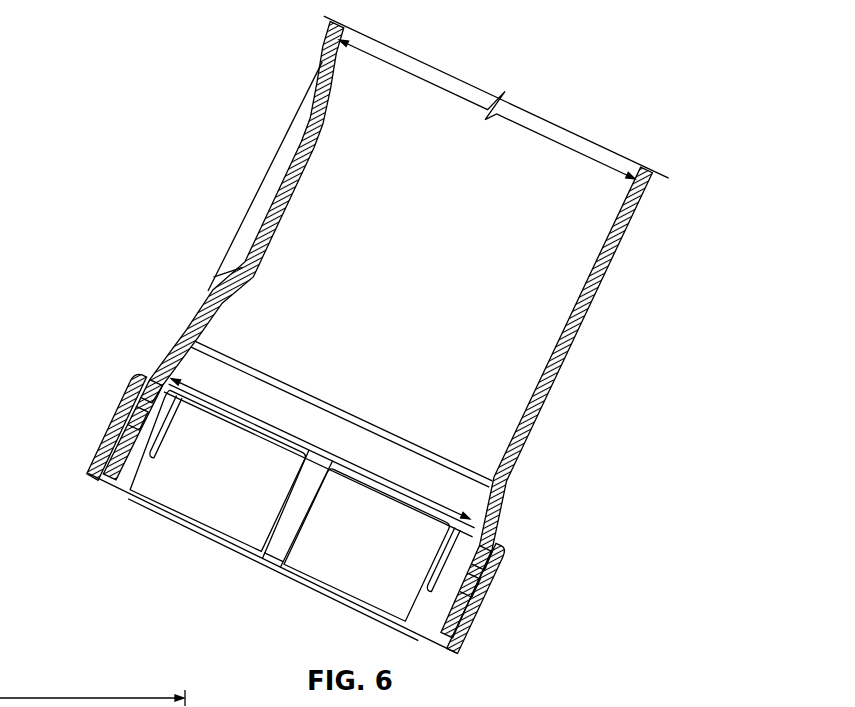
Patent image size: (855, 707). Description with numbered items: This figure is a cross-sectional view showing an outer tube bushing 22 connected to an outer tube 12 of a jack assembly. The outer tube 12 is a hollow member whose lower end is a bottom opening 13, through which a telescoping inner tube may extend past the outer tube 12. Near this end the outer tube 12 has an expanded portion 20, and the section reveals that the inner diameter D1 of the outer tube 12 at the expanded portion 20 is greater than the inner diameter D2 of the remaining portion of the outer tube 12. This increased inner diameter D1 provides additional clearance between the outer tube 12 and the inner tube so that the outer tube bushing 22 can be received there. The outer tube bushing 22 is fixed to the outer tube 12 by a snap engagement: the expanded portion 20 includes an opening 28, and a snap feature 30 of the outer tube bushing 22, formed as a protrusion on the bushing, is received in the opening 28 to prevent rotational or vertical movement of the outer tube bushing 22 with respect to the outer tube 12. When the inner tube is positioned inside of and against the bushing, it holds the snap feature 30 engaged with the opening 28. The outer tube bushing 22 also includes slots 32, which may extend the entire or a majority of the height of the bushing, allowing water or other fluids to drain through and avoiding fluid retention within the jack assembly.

The outer tube 12 is at (207, 300).
The bottom opening 13 is at (184, 546).
The expanded portion 20 is at (168, 358).
The outer tube bushing 22 is at (463, 626).
The opening 28 is at (150, 400).
The snap feature 30 is at (143, 418).
The slots 32 is at (290, 522).
The inner diameter at the expanded portion D1 is at (527, 130).
The inner diameter of the remaining portion D2 is at (320, 450).